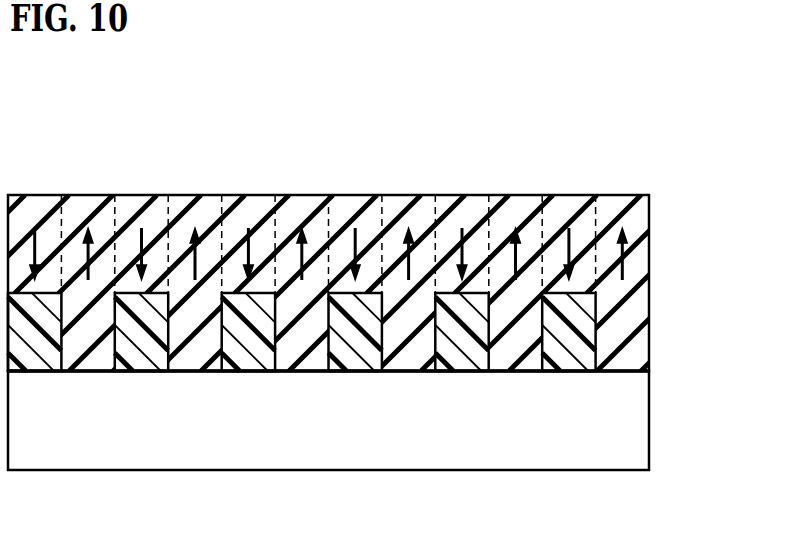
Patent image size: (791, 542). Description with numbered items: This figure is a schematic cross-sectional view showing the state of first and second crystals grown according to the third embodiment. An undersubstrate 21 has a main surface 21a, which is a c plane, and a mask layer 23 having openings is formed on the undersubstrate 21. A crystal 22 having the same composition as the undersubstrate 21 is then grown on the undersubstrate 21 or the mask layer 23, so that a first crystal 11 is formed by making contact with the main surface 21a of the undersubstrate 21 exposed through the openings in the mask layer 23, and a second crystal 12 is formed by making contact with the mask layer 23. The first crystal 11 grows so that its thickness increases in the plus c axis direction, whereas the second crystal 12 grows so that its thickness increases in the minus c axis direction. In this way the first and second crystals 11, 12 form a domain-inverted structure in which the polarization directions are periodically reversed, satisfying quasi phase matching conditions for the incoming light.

The first crystal 11 is at (623, 206).
The second crystal 12 is at (570, 206).
The undersubstrate 21 is at (620, 418).
The main surface 21a is at (627, 363).
The crystal 22 is at (15, 134).
The mask layer 23 is at (570, 322).